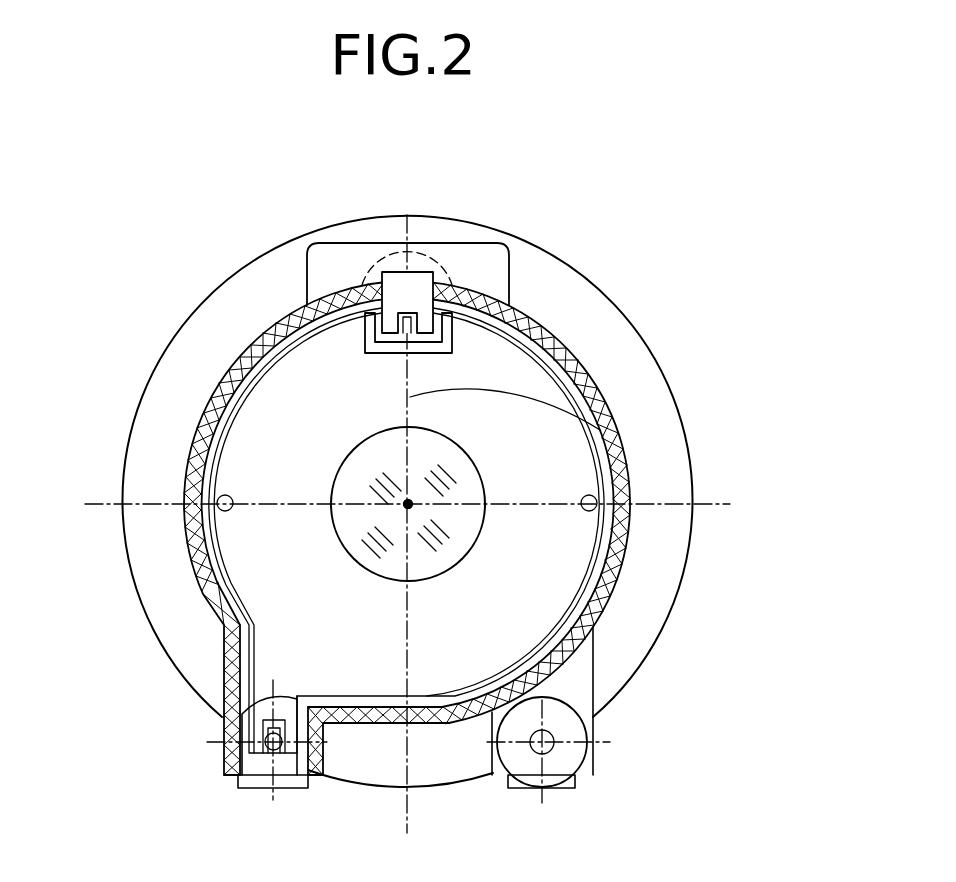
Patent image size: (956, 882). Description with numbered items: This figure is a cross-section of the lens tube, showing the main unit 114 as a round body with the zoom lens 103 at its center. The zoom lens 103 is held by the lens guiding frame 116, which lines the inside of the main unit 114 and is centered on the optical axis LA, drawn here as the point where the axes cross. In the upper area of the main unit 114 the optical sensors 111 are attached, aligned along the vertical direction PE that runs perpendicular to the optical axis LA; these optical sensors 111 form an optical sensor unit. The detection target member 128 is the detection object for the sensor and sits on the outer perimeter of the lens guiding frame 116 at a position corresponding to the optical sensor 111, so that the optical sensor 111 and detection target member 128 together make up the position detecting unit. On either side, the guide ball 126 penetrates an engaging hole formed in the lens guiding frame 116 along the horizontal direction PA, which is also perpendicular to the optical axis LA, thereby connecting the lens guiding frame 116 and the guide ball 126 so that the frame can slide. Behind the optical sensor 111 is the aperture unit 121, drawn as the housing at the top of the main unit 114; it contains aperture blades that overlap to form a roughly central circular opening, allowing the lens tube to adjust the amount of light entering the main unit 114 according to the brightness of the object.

The zoom lens 103 is at (440, 548).
The optical sensor 111 is at (422, 283).
The main unit 114 is at (603, 397).
The lens guiding frame 116 is at (318, 385).
The aperture unit 121 is at (330, 262).
The guide ball 126 is at (223, 495).
The detection target member 128 is at (433, 357).
The vertical direction PE is at (612, 436).
The horizontal direction PA is at (140, 505).
The optical axis LA is at (408, 504).